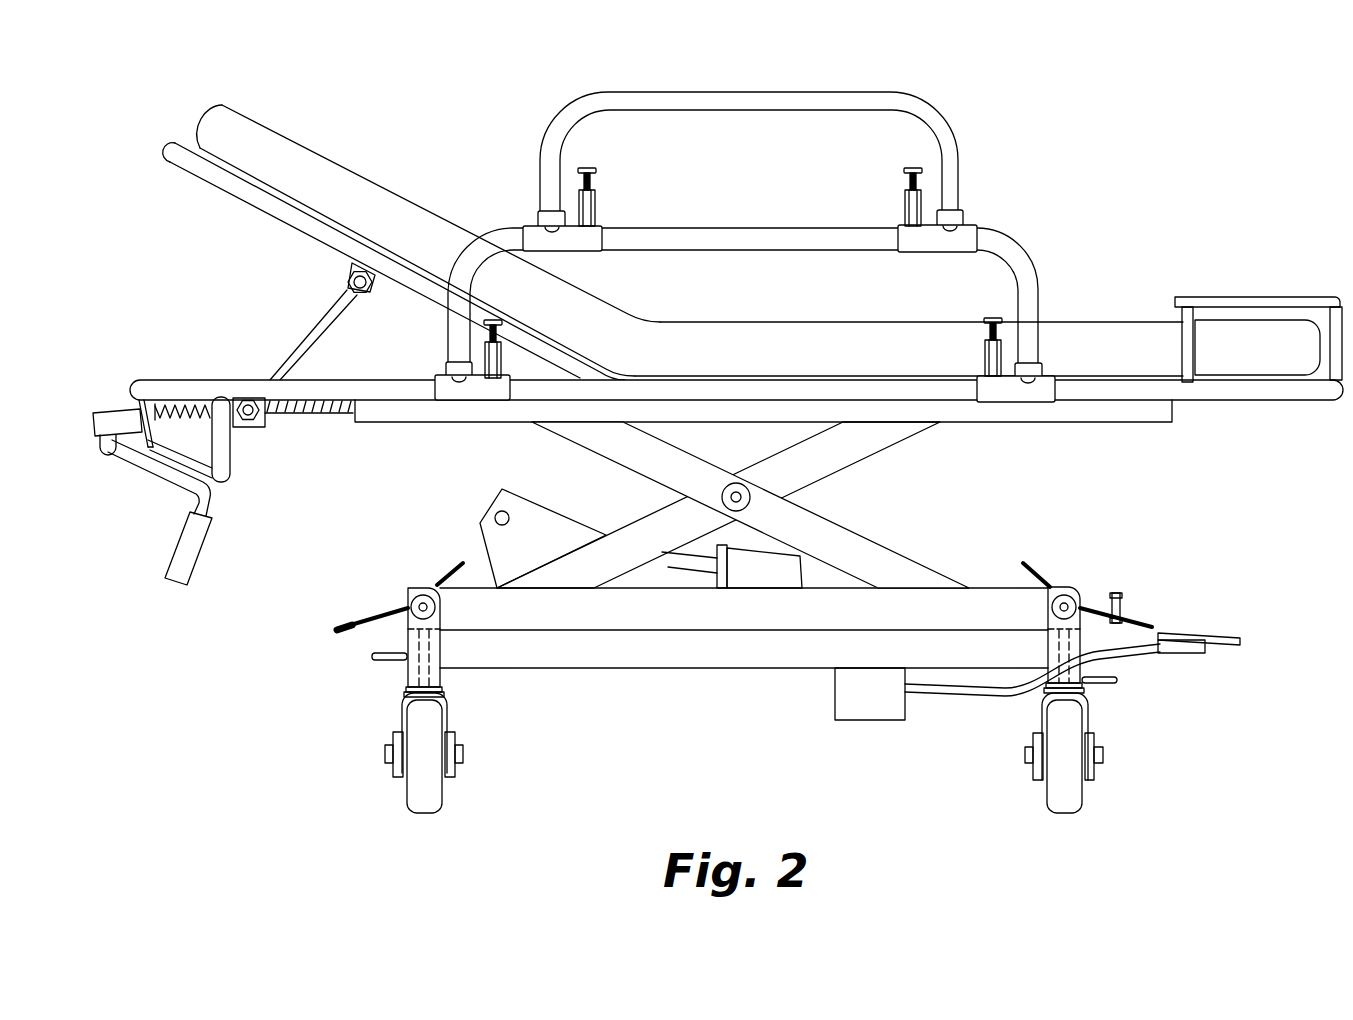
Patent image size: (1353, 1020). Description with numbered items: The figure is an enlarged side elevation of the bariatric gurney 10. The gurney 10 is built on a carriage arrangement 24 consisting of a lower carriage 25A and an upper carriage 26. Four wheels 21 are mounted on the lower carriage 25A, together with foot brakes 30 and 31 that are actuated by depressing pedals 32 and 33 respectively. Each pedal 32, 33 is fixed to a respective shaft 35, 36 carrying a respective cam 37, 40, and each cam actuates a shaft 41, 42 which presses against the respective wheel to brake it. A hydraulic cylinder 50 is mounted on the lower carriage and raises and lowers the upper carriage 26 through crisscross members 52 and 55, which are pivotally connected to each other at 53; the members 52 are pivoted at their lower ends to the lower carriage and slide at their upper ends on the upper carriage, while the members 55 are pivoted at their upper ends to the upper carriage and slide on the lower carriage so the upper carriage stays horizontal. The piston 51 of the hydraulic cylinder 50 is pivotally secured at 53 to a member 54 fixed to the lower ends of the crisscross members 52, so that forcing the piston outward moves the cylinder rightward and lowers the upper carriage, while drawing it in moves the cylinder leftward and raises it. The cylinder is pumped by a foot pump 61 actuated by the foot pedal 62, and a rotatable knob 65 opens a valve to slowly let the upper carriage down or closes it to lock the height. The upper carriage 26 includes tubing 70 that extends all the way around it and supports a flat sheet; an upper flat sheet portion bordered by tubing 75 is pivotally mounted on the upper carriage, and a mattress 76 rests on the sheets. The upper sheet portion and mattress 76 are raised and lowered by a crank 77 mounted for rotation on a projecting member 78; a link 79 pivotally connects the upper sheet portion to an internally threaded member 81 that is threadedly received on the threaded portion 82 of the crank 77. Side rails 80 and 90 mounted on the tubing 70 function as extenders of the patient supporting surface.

The gurney 10 is at (1097, 203).
The wheels 21 is at (466, 804).
The carriage arrangement 24 is at (234, 633).
The lower carriage 25A is at (1062, 566).
The upper carriage 26 is at (1092, 432).
The foot brake 30 is at (1082, 603).
The foot brake 31 is at (394, 615).
The pedal 32 is at (1158, 614).
The pedal 33 is at (337, 618).
The shaft 35 is at (1082, 607).
The shaft 36 is at (418, 590).
The cam 37 is at (1048, 615).
The cam 40 is at (440, 620).
The shaft 41 is at (1120, 675).
The shaft 42 is at (408, 670).
The hydraulic cylinder 50 is at (697, 572).
The piston 51 is at (687, 557).
The crisscross members 52 is at (650, 528).
The pivotal connection 53 is at (504, 511).
The member 54 is at (516, 518).
The crisscross members 55 is at (840, 535).
The foot pump 61 is at (860, 700).
The foot pedal 62 is at (1222, 648).
The rotatable knob 65 is at (1126, 579).
The tubing 70 is at (1283, 398).
The tubing 75 is at (249, 198).
The mattress 76 is at (1118, 343).
The crank 77 is at (130, 492).
The projecting member 78 is at (135, 407).
The link 79 is at (320, 312).
The side rail 80 is at (1007, 255).
The internally threaded member 81 is at (248, 430).
The threaded portion 82 is at (305, 415).
The side rail 90 is at (903, 100).